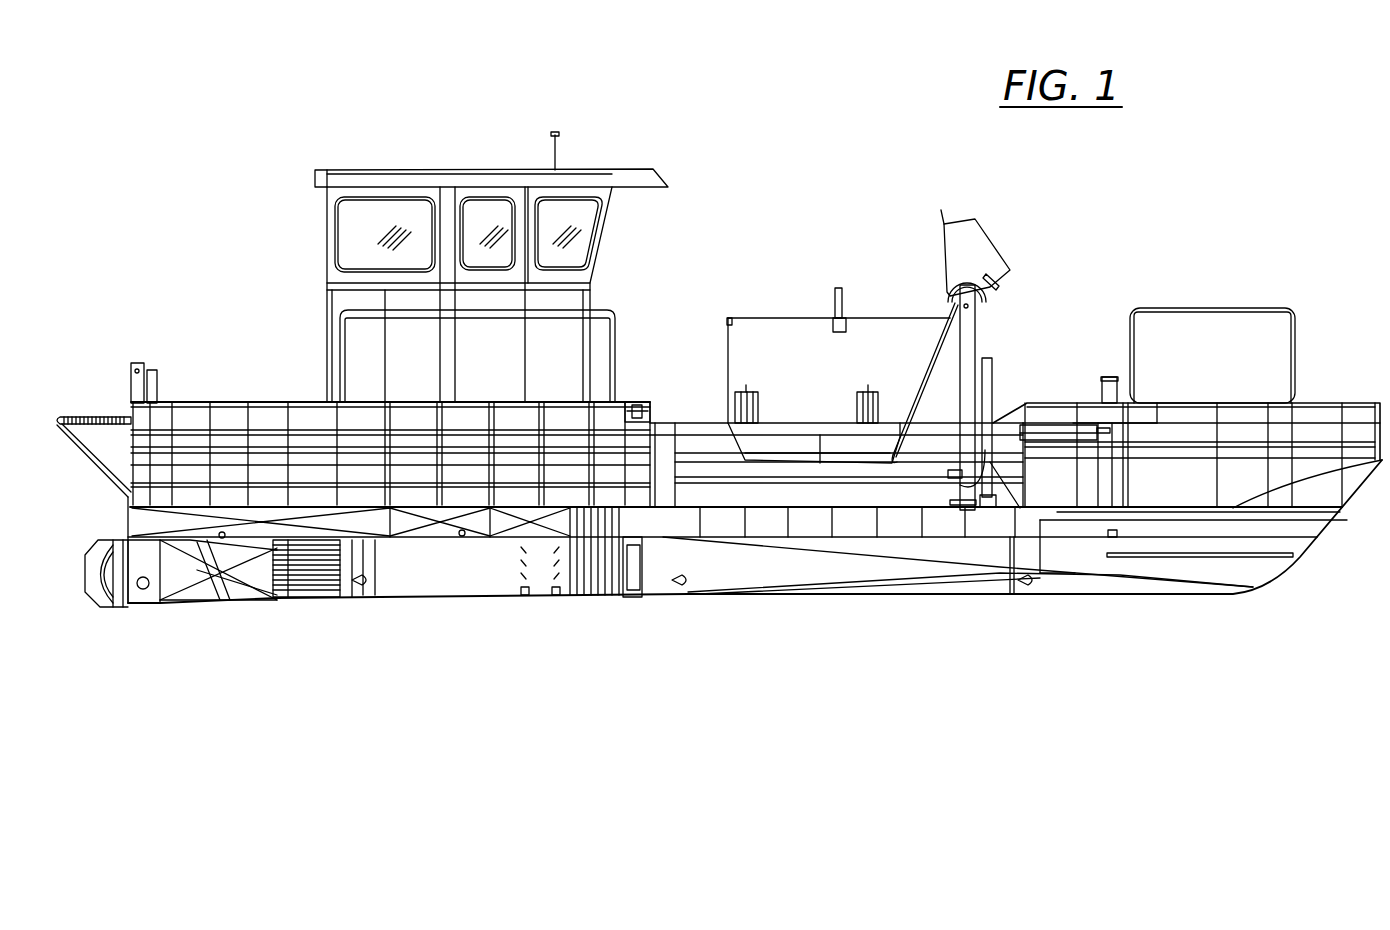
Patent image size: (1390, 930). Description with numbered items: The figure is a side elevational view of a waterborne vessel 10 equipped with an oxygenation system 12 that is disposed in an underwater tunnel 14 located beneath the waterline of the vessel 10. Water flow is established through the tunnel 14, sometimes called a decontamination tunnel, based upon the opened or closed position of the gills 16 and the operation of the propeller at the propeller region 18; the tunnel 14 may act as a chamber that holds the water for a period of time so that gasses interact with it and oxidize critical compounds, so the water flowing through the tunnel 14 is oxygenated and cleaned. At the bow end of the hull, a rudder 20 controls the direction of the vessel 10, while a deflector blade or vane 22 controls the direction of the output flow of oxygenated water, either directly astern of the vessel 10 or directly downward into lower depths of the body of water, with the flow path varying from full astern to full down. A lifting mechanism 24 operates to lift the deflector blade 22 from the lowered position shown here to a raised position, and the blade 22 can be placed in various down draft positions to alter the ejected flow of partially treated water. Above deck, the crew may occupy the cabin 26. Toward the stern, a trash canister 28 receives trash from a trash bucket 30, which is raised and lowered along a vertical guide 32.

The waterborne vessel 10 is at (1350, 398).
The oxygenation system 12 is at (400, 598).
The underwater tunnel 14 is at (443, 587).
The gills 16 is at (312, 599).
The propeller region 18 is at (203, 600).
The rudder 20 is at (140, 605).
The deflector blade 22 is at (96, 606).
The lifting mechanism 24 is at (80, 455).
The cabin 26 is at (327, 272).
The trash canister 28 is at (728, 350).
The trash bucket 30 is at (985, 262).
The vertical guide 32 is at (975, 330).